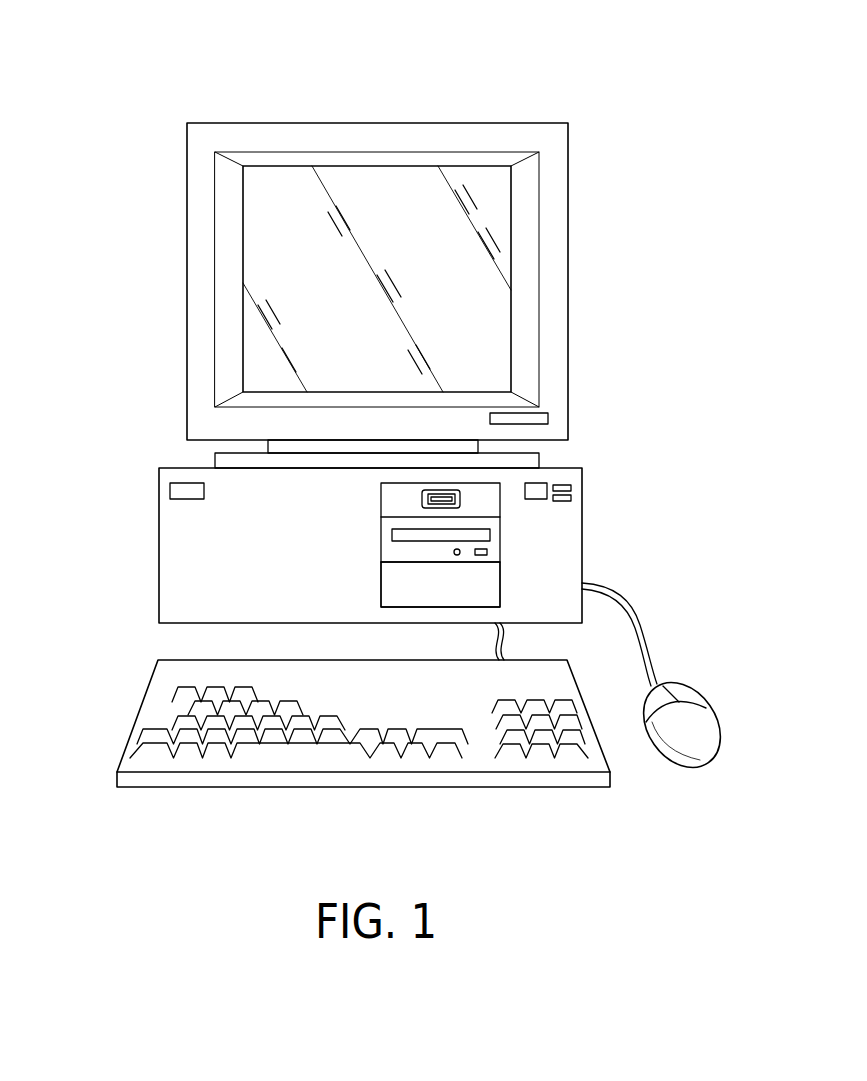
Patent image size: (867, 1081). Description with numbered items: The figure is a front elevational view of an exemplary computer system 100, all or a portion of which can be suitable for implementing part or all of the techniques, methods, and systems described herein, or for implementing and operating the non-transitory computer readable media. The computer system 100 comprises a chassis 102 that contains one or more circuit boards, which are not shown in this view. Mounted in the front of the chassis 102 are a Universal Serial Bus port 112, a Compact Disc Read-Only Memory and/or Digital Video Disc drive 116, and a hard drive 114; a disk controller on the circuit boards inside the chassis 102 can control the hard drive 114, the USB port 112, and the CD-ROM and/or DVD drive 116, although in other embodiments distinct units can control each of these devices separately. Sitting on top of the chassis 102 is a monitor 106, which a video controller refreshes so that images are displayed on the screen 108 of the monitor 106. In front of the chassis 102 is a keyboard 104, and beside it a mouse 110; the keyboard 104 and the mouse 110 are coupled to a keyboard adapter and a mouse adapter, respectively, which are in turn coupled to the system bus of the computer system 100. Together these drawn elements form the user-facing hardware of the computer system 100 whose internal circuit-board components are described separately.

The computer system 100 is at (564, 94).
The chassis 102 is at (158, 548).
The keyboard 104 is at (139, 711).
The monitor 106 is at (263, 123).
The screen 108 is at (293, 283).
The mouse 110 is at (702, 715).
The Universal Serial Bus (USB) port 112 is at (460, 497).
The hard drive 114 is at (491, 583).
The CD-ROM and/or DVD drive 116 is at (491, 541).